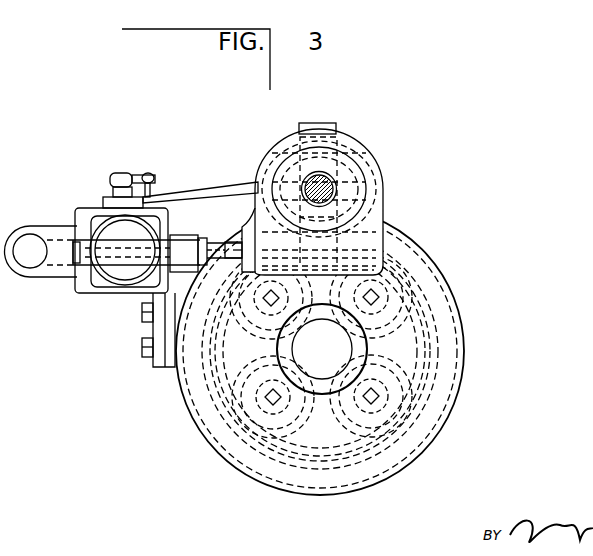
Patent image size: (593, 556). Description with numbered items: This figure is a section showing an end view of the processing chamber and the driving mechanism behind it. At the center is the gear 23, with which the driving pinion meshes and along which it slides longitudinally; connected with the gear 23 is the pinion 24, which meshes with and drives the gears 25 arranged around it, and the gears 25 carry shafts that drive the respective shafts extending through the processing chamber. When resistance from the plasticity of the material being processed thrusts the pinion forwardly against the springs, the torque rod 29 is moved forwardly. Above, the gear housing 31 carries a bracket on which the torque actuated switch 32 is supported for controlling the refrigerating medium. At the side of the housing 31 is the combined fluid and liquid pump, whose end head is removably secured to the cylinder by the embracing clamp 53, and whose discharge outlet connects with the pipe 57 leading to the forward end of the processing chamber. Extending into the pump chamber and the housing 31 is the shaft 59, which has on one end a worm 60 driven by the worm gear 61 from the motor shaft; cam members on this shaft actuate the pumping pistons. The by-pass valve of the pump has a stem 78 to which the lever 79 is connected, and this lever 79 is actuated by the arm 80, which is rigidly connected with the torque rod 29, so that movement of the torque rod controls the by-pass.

The gear 23 is at (330, 467).
The pinion 24 is at (350, 353).
The gears 25 is at (413, 297).
The torque rod 29 is at (370, 150).
The gear housing 31 is at (342, 152).
The torque actuated switch 32 is at (333, 121).
The embracing clamp 53 is at (87, 258).
The pipe 57 is at (31, 240).
The shaft 59 is at (208, 240).
The worm 60 is at (342, 248).
The worm gear 61 is at (321, 190).
The valve stem 78 is at (124, 173).
The lever 79 is at (150, 174).
The arm 80 is at (207, 197).